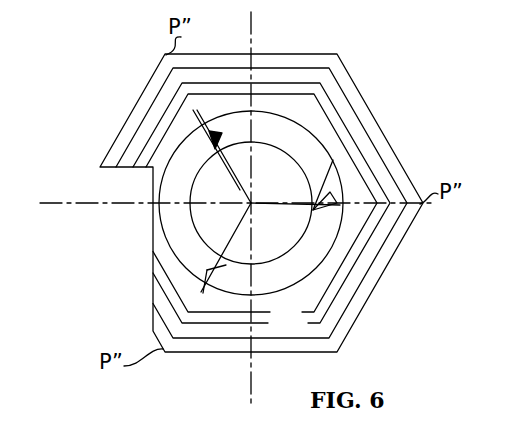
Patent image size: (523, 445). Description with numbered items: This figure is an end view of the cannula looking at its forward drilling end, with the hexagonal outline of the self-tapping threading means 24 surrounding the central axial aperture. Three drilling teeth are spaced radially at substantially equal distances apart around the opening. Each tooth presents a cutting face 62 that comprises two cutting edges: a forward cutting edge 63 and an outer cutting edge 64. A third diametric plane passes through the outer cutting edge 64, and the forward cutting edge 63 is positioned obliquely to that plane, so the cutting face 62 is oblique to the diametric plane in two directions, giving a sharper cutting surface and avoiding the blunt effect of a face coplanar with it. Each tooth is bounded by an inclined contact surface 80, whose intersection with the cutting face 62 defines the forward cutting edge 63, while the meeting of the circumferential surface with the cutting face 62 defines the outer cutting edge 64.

The self-tapping threading means 24 is at (284, 55).
The cutting face 62 is at (215, 149).
The forward cutting edge 63 is at (140, 141).
The outer cutting edge 64 is at (183, 140).
The inclined contact surface 80 is at (297, 132).